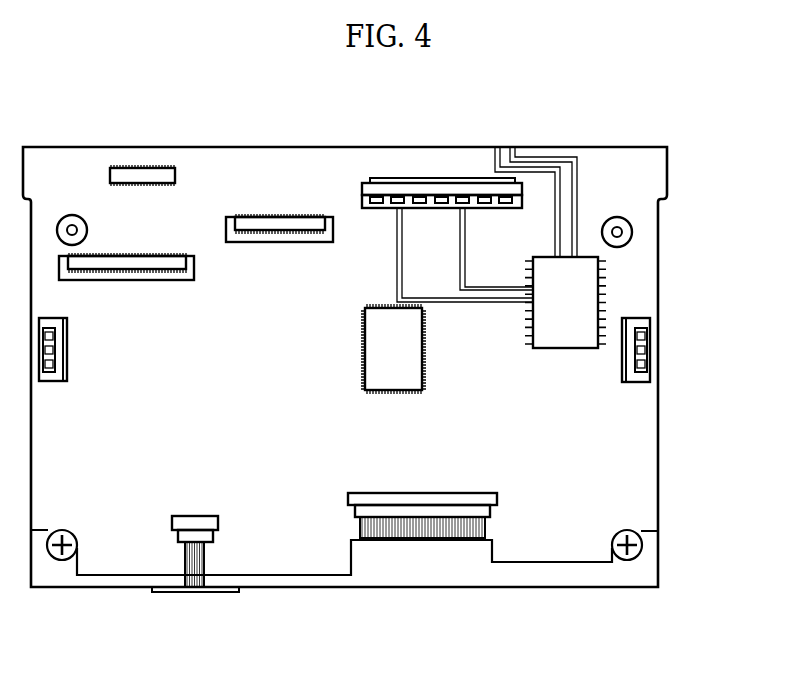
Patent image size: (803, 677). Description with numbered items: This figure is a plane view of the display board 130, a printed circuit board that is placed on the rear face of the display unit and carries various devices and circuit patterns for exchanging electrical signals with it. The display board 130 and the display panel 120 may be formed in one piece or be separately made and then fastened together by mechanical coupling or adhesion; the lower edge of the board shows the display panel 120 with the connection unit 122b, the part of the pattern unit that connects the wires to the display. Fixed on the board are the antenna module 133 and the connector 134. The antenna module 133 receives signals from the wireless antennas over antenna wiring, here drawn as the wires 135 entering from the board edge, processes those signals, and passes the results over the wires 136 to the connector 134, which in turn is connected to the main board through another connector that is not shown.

The display board 130 is at (668, 448).
The display panel 120 is at (513, 578).
The connection unit 122b is at (213, 593).
The antenna module 133 is at (588, 287).
The connector 134 is at (412, 180).
The signal lines 135 is at (552, 160).
The signal lines 136 is at (397, 265).